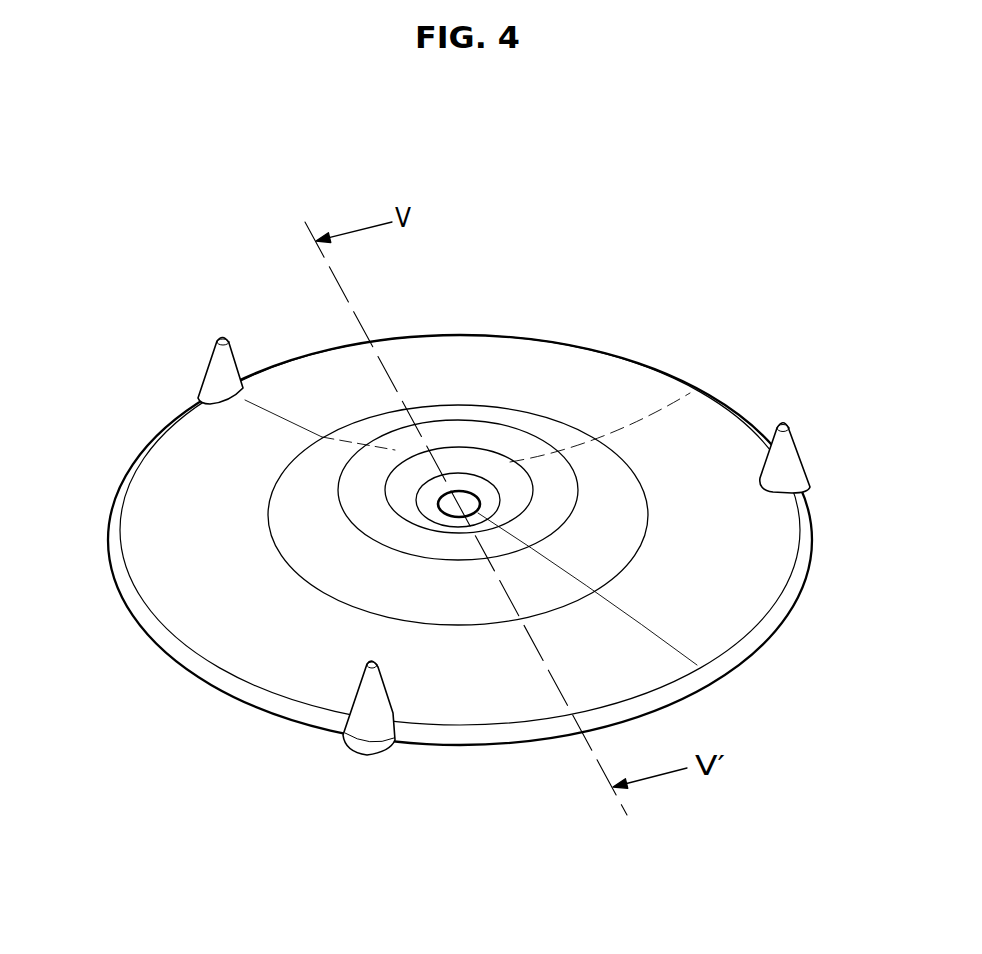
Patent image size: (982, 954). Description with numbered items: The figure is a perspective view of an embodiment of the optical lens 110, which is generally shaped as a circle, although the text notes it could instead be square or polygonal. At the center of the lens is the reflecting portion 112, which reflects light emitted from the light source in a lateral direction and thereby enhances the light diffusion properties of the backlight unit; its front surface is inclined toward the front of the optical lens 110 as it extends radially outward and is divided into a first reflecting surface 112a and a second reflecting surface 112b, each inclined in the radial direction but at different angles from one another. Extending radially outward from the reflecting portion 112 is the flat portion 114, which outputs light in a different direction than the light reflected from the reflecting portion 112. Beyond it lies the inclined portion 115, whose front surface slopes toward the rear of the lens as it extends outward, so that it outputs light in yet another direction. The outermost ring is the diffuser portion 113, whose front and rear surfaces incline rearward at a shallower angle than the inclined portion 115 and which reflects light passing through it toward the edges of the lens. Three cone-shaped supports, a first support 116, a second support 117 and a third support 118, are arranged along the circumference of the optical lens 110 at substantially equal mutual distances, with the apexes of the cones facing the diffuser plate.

The optical lens 110 is at (323, 133).
The reflecting portion 112 is at (562, 268).
The first reflecting surface 112a is at (461, 503).
The second reflecting surface 112b is at (453, 460).
The diffuser portion 113 is at (215, 632).
The flat portion 114 is at (556, 470).
The inclined portion 115 is at (622, 487).
The first support 116 is at (194, 361).
The second support 117 is at (341, 701).
The third support 118 is at (813, 434).